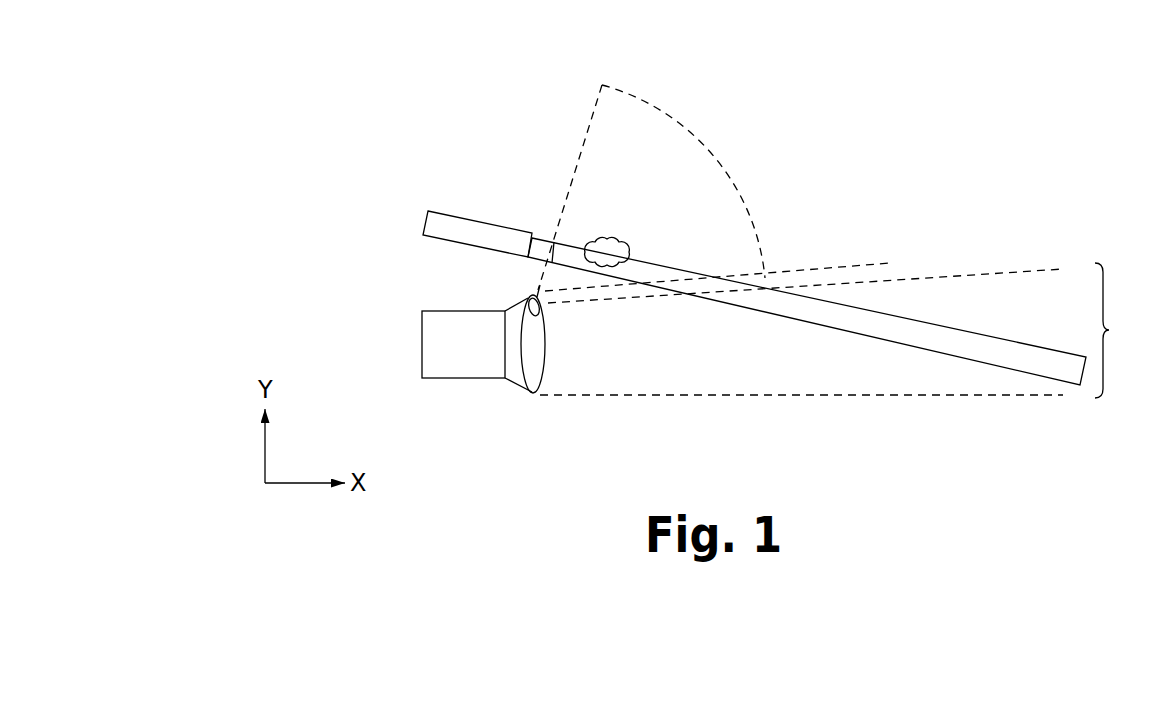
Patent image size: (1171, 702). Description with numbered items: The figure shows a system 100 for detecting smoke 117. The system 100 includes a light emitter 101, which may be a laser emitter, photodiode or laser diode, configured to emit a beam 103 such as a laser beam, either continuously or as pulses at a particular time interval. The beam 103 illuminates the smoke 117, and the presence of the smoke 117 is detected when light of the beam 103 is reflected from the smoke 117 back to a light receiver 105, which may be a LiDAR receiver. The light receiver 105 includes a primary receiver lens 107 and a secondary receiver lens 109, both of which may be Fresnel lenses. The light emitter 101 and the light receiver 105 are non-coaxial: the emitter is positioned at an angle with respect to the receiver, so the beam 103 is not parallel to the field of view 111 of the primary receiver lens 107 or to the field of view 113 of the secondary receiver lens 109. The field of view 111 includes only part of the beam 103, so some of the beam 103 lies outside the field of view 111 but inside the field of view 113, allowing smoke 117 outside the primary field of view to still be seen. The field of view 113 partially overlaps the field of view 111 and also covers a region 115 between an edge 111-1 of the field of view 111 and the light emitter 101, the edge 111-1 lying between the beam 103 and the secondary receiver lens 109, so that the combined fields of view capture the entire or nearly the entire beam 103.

The system for detecting smoke 100 is at (368, 121).
The light emitter 101 is at (422, 219).
The beam 103 is at (559, 239).
The light receiver 105 is at (420, 350).
The primary receiver lens 107 is at (546, 373).
The secondary receiver lens 109 is at (547, 313).
The field of view of the primary receiver lens 111 is at (844, 330).
The edge of the field of view 111-1 is at (1041, 266).
The field of view of the secondary receiver lens 113 is at (735, 256).
The region 115 is at (556, 275).
The smoke 117 is at (607, 237).